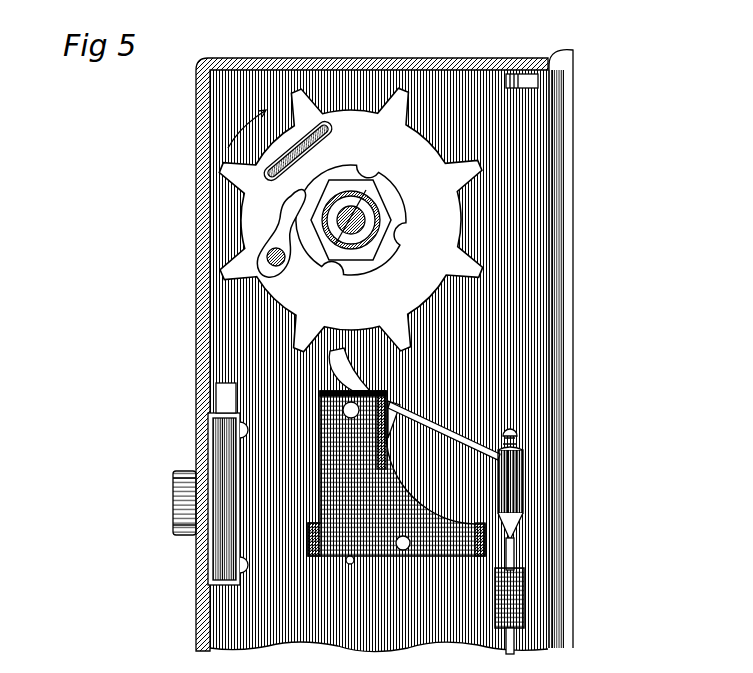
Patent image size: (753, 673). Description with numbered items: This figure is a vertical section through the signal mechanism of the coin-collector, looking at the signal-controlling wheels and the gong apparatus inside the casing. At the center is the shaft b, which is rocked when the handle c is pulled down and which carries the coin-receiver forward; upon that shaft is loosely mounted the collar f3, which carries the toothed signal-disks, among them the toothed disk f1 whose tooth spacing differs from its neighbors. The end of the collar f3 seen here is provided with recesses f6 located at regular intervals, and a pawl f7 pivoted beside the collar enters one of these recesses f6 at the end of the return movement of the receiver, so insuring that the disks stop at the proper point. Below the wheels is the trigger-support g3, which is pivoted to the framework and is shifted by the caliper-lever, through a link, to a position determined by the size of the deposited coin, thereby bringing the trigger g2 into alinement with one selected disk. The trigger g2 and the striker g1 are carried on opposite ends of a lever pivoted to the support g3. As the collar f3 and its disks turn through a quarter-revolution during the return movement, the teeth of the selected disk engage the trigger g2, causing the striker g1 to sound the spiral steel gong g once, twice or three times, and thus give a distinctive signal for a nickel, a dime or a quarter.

The toothed disk f1 is at (353, 110).
The recesses f6 is at (363, 158).
The shaft b is at (352, 208).
The pawl f7 is at (289, 184).
The collar f3 is at (320, 263).
The trigger g2 is at (352, 330).
The trigger-support g3 is at (396, 477).
The handle c is at (404, 422).
The striker g1 is at (512, 484).
The spiral steel gong g is at (503, 646).